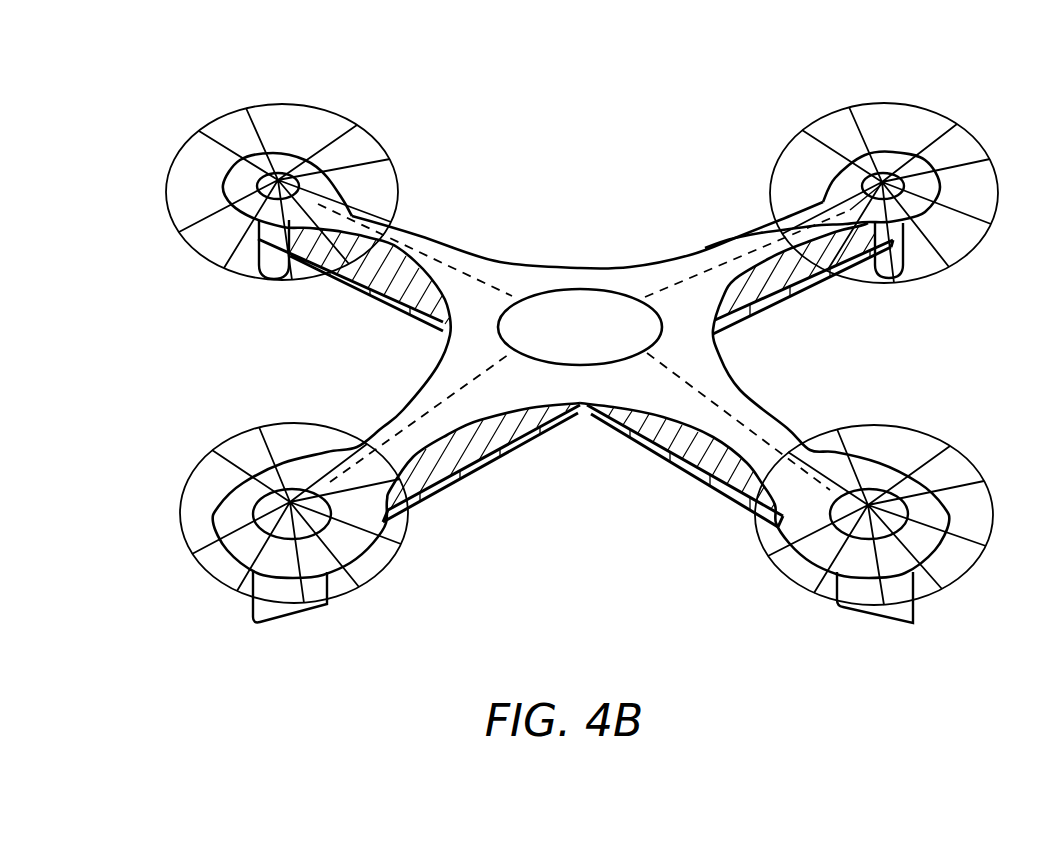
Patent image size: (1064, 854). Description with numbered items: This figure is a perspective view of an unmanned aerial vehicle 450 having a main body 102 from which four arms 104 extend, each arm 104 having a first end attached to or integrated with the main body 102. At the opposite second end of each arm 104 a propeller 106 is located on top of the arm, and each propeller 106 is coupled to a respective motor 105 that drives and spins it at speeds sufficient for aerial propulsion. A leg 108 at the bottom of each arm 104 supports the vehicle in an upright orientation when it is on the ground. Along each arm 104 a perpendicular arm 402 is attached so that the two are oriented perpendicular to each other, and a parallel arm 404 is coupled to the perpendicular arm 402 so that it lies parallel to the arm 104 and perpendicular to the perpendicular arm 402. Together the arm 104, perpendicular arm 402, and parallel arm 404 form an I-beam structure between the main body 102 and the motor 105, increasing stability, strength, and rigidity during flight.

The unmanned aerial vehicle 450 is at (498, 116).
The main body 102 is at (558, 268).
The arm 104 is at (414, 232).
The motor 105 is at (262, 180).
The propeller 106 is at (930, 104).
The leg 108 is at (897, 281).
The perpendicular arm 402 is at (365, 292).
The parallel arm 404 is at (410, 307).